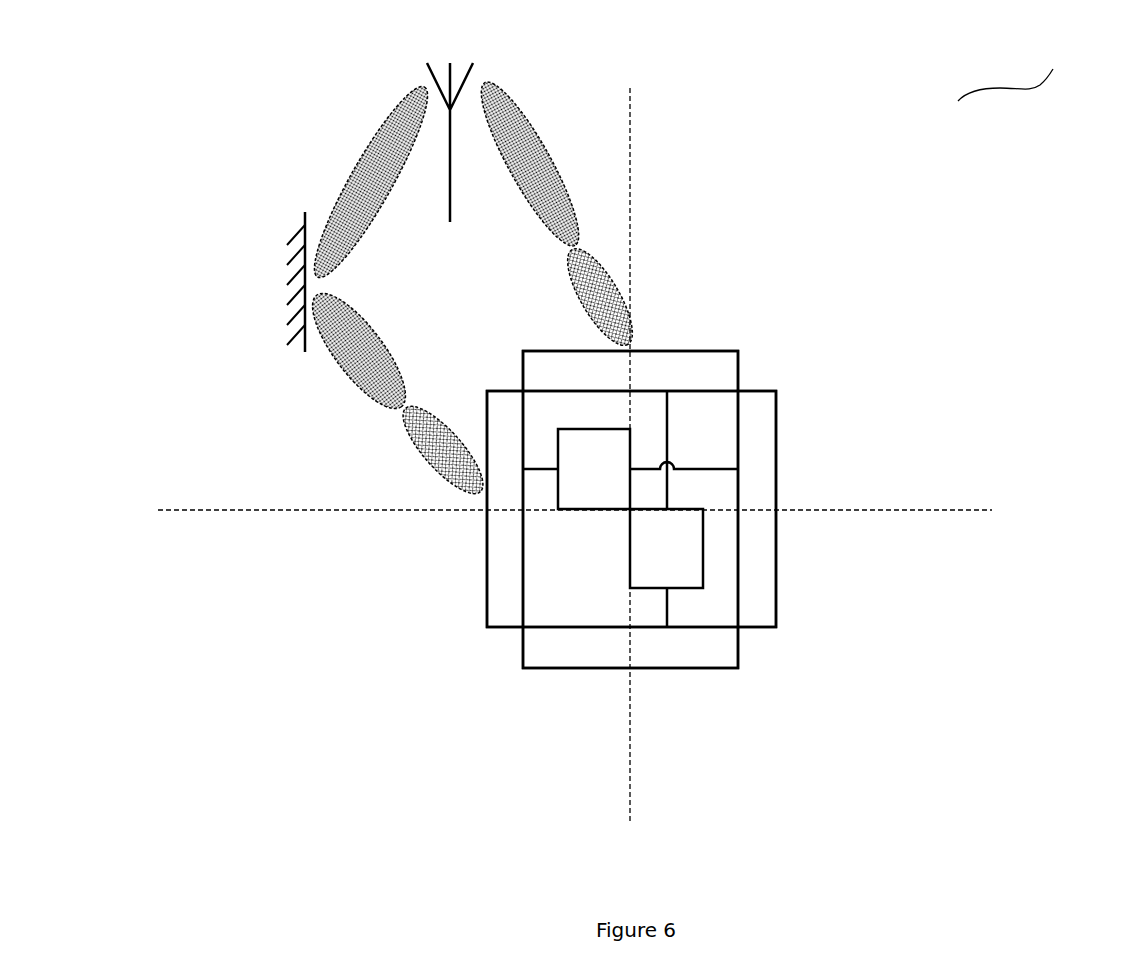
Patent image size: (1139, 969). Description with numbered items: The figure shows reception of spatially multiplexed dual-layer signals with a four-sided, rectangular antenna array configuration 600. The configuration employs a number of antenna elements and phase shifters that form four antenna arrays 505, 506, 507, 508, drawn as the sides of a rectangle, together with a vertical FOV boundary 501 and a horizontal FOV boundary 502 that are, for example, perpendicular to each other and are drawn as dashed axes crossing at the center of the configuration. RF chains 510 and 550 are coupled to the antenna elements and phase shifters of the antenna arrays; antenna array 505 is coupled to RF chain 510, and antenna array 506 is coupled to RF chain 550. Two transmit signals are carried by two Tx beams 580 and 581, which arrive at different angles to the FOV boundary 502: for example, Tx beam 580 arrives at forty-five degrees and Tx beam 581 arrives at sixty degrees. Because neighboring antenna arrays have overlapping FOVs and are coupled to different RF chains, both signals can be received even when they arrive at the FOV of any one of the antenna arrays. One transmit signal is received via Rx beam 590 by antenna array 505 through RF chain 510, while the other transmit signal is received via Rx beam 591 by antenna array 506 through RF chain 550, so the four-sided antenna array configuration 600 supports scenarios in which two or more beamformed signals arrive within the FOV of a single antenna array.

The vertical FOV boundary 501 is at (631, 440).
The horizontal FOV boundary 502 is at (618, 510).
The antenna array 505 is at (505, 509).
The antenna array 506 is at (630, 371).
The antenna array 507 is at (757, 509).
The antenna array 508 is at (630, 647).
The RF chain 510 is at (591, 456).
The RF chain 550 is at (670, 566).
The Tx beam 580 is at (364, 182).
The Tx beam 581 is at (531, 163).
The Rx beam 590 is at (429, 450).
The Rx beam 591 is at (616, 297).
The four-sided antenna array configuration 600 is at (1023, 65).